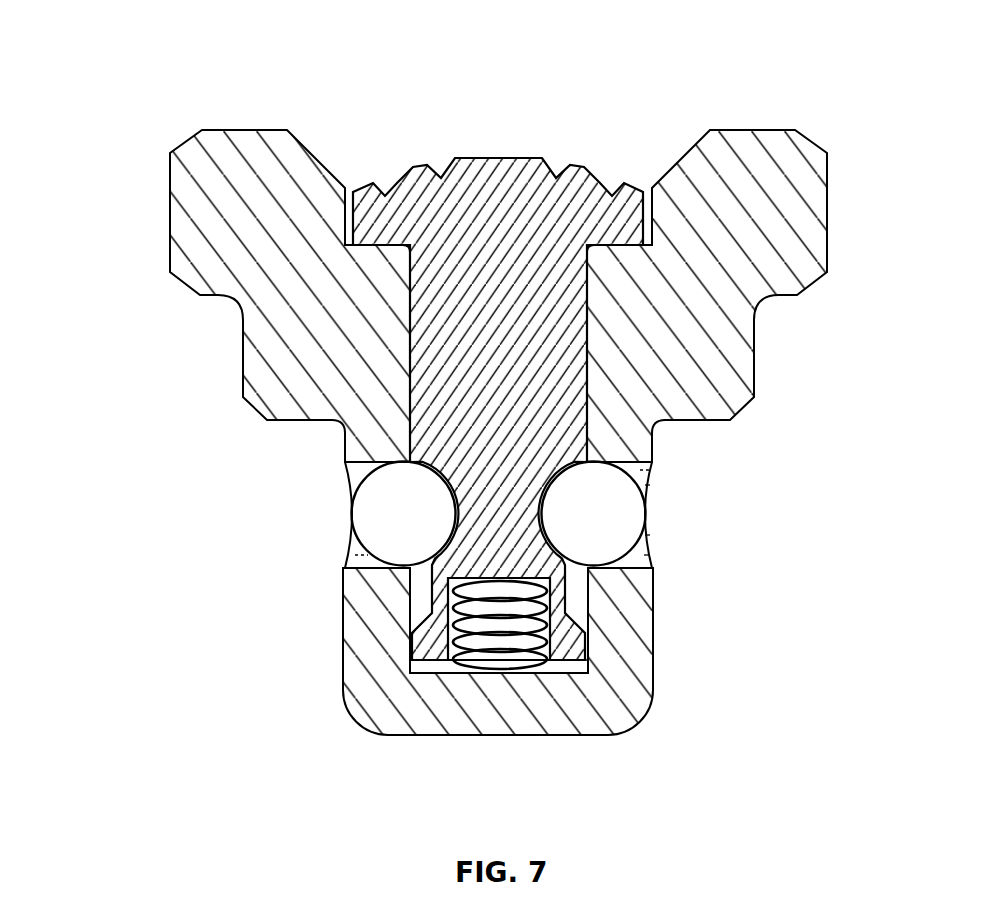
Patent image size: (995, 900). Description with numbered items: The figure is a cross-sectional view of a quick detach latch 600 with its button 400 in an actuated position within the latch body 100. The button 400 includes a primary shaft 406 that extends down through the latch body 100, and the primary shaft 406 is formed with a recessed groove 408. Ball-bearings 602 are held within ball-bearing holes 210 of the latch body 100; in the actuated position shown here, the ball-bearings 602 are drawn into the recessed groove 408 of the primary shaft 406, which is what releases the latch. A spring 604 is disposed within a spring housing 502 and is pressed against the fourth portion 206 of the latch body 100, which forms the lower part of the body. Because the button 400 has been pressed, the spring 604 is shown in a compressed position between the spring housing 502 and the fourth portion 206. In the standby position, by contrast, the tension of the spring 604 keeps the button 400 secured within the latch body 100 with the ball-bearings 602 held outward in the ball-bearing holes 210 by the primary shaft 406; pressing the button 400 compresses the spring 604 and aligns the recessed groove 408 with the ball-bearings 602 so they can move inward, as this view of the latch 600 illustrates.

The latch 600 is at (127, 80).
The button 400 is at (477, 140).
The latch body 100 is at (238, 332).
The primary shaft 406 is at (427, 362).
The ball-bearing holes 210 is at (335, 470).
The ball-bearings 602 is at (350, 513).
The recessed groove 408 is at (440, 560).
The spring housing 502 is at (548, 587).
The spring 604 is at (543, 660).
The fourth portion 206 is at (373, 700).